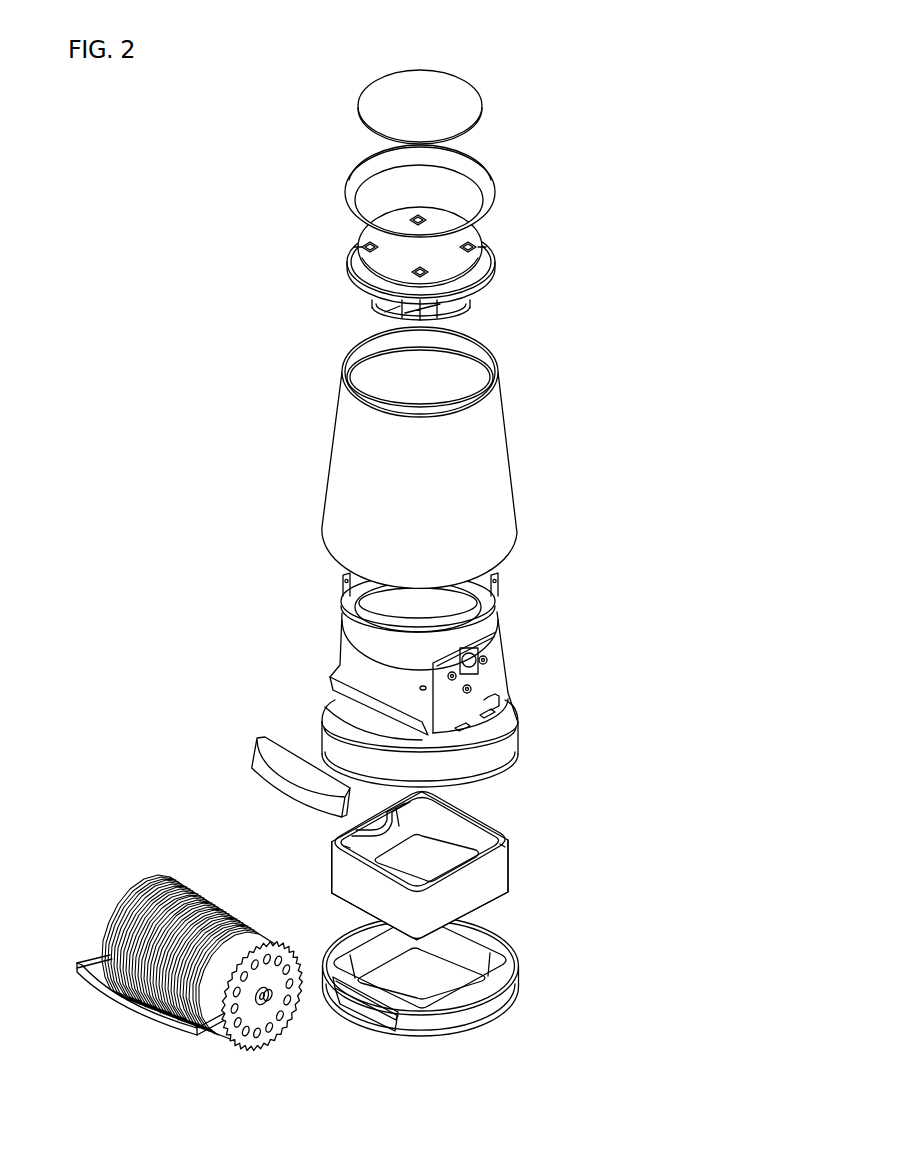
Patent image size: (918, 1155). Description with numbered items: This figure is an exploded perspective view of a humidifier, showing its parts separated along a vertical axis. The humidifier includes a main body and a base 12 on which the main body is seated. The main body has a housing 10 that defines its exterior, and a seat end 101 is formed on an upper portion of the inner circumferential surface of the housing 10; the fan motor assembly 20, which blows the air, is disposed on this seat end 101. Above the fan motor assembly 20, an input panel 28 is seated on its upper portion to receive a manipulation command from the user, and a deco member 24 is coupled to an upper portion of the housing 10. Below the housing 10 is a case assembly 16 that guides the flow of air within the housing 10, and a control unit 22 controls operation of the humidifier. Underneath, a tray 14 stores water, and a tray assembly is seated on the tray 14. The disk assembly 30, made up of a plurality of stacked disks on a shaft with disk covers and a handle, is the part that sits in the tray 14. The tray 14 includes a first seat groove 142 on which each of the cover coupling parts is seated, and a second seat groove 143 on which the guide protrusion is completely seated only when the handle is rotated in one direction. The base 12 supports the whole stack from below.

The housing 10 is at (506, 408).
The seat end 101 is at (463, 357).
The base 12 is at (527, 953).
The tray 14 is at (425, 858).
The first seat groove 142 is at (400, 816).
The second seat groove 143 is at (360, 820).
The case assembly 16 is at (516, 643).
The fan motor assembly 20 is at (504, 251).
The control unit 22 is at (247, 735).
The deco member 24 is at (517, 181).
The input panel 28 is at (494, 123).
The disk assembly 30 is at (125, 875).